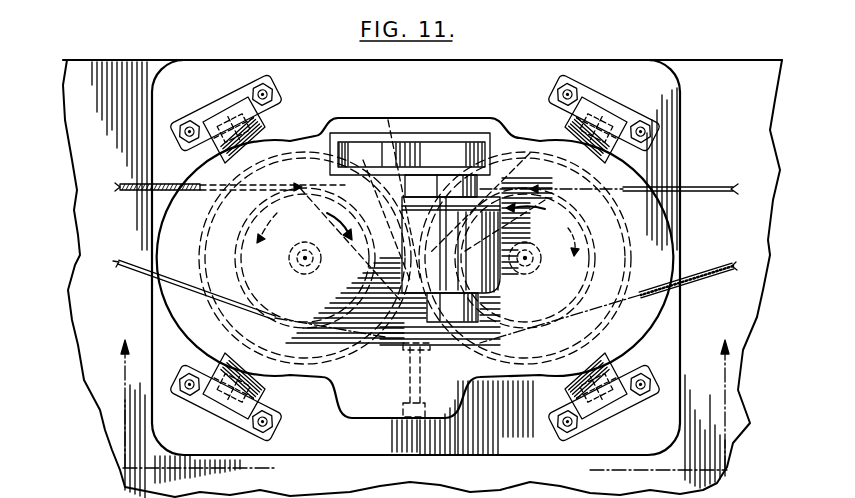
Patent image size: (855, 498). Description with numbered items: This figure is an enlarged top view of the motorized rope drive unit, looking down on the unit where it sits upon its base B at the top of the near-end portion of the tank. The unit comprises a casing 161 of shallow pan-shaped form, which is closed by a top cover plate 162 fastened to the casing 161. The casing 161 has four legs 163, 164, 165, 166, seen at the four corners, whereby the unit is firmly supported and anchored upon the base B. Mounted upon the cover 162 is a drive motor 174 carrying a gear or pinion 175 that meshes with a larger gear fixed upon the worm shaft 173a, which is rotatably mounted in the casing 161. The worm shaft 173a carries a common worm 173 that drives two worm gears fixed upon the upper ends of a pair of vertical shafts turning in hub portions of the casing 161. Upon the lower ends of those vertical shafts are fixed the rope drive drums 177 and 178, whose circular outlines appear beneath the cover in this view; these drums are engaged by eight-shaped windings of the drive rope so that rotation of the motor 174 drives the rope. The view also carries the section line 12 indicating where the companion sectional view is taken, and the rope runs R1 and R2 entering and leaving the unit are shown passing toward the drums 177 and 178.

The base B is at (103, 416).
The section line 12— 12 is at (424, 393).
The casing 161 is at (535, 378).
The top cover plate 162 is at (343, 377).
The leg 163 is at (268, 410).
The leg 164 is at (230, 124).
The leg 165 is at (567, 143).
The leg 166 is at (607, 368).
The worm 173 is at (484, 330).
The worm shaft 173a is at (386, 172).
The drive motor 174 is at (487, 273).
The gear or pinion 175 is at (446, 148).
The rope drive drum 177 is at (240, 236).
The rope drive drum 178 is at (650, 238).
The rod R1 is at (126, 193).
The rod R2 is at (696, 180).